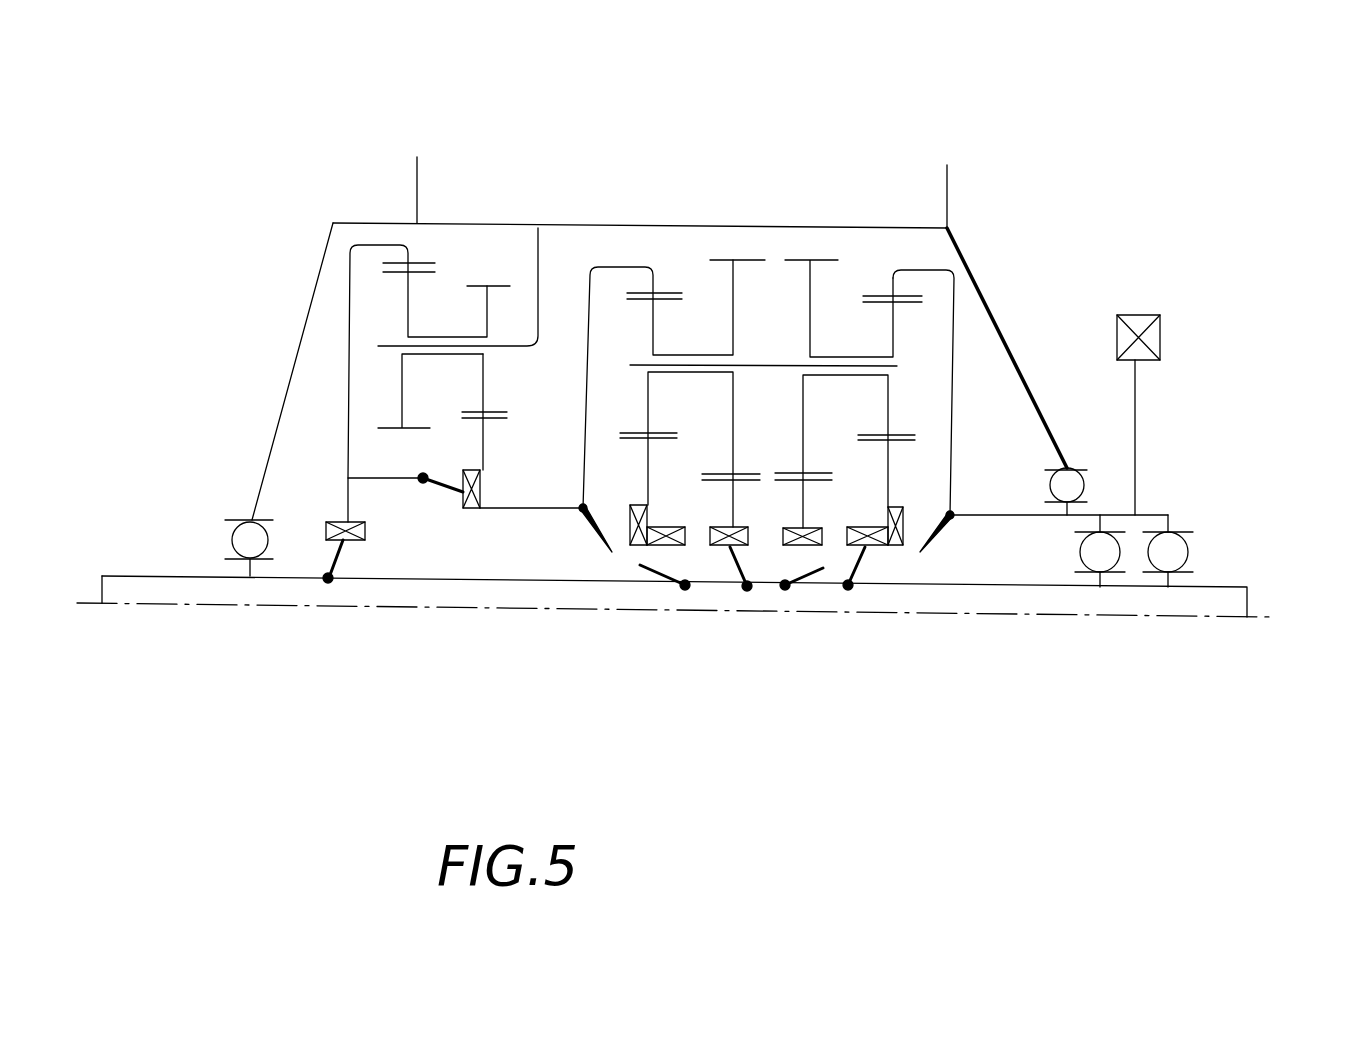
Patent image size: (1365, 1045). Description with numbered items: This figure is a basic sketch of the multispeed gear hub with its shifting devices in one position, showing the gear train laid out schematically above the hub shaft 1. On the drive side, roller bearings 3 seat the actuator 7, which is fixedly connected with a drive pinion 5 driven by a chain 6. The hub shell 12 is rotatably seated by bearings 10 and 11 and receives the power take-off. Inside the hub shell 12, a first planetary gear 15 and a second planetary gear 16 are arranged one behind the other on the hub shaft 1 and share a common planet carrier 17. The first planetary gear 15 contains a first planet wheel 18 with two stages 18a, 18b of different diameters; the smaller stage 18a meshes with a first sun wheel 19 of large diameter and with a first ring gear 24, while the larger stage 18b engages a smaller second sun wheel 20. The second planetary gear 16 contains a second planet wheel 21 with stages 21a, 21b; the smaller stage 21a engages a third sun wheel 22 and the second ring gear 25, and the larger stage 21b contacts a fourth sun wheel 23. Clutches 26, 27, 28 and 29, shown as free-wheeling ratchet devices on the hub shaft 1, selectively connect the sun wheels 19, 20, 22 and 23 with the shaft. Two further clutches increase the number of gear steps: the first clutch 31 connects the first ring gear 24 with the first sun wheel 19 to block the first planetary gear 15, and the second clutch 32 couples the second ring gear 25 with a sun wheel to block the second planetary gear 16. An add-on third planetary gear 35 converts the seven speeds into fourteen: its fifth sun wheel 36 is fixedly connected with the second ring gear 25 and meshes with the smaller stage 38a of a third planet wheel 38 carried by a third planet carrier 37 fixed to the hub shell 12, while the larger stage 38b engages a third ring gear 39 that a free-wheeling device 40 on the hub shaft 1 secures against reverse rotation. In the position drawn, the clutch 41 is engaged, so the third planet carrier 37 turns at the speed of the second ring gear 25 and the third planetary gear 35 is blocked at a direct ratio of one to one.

The hub shaft 1 is at (1229, 594).
The roller bearings 3 is at (1168, 552).
The drive pinion 5 is at (1136, 417).
The chain 6 is at (1140, 322).
The actuator 7 is at (1033, 517).
The bearing 10 is at (1075, 486).
The bearing 11 is at (238, 540).
The hub shell 12 is at (648, 227).
The first planetary gear 15 is at (858, 252).
The second planetary gear 16 is at (692, 253).
The common planet carrier 17 is at (765, 367).
The first planet wheel 18 is at (870, 357).
The stage of first planet wheel 18a is at (888, 400).
The stage of first planet wheel 18b is at (807, 305).
The first sun wheel 19 is at (888, 490).
The second sun wheel 20 is at (803, 500).
The second planet wheel 21 is at (703, 358).
The stage of second planet wheel 21a is at (652, 322).
The stage of second planet wheel 21b is at (733, 410).
The third sun wheel 22 is at (645, 487).
The fourth sun wheel 23 is at (730, 508).
The first ring gear 24 is at (937, 271).
The second ring gear 25 is at (620, 268).
The clutch 26 is at (862, 566).
The clutch 27 is at (810, 583).
The clutch 28 is at (745, 590).
The clutch 29 is at (668, 585).
The first clutch 31 is at (945, 525).
The second clutch 32 is at (597, 533).
The third planetary gear 35 is at (470, 248).
The fifth sun wheel 36 is at (483, 458).
The third planet carrier 37 is at (537, 263).
The third planet wheel 38 is at (445, 336).
The stage of third planet wheel 38a is at (483, 383).
The stage of third planet wheel 38b is at (402, 383).
The third ring gear 39 is at (352, 330).
The free-wheeling device 40 is at (355, 540).
The clutch 41 is at (458, 493).